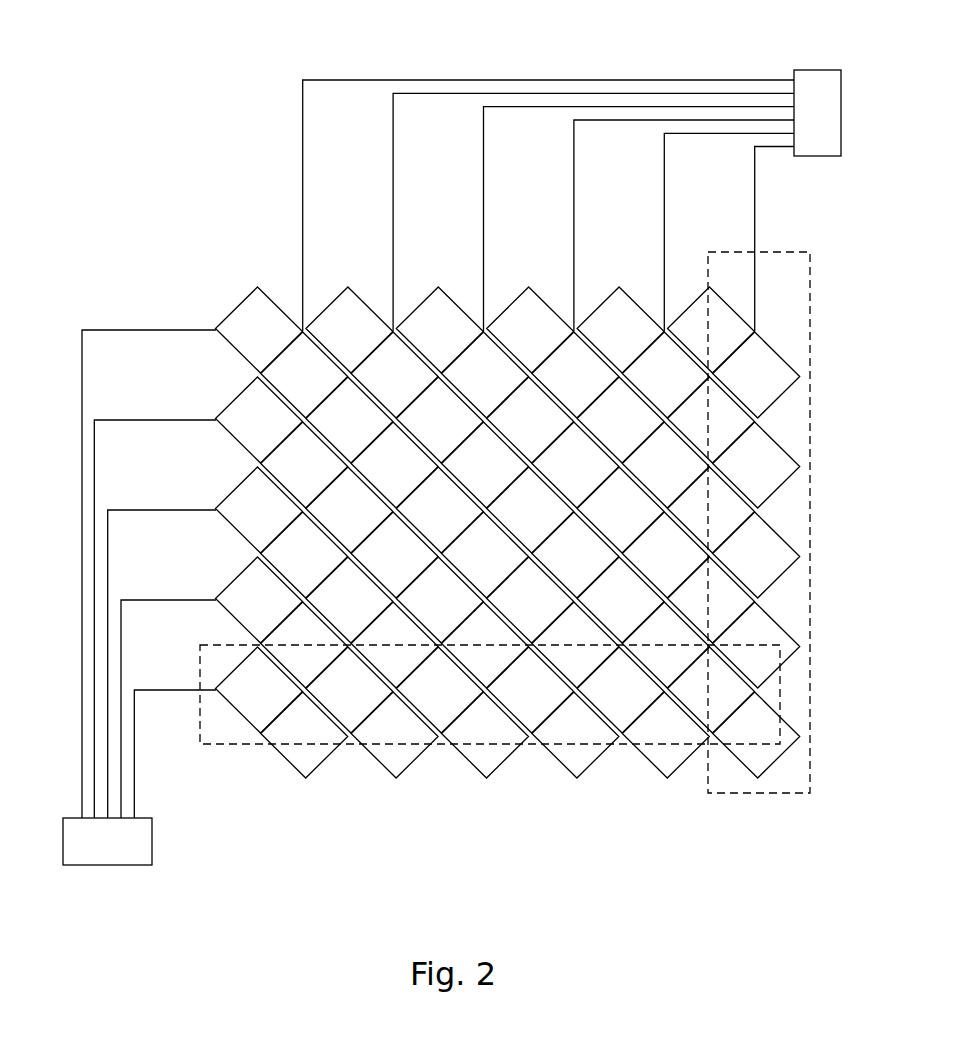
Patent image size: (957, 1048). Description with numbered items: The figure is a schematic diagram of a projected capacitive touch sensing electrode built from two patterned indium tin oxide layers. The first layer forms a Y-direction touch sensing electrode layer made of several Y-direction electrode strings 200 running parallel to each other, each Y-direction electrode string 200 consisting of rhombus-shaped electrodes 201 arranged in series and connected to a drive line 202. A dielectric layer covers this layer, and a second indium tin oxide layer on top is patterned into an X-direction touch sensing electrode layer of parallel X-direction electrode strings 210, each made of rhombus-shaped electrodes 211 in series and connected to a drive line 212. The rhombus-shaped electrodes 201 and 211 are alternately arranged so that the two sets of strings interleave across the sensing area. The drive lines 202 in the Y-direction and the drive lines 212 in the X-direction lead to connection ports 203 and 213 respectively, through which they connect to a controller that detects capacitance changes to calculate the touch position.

The Y-direction electrode string 200 is at (762, 795).
The rhombus-shaped electrode 201 is at (770, 385).
The drive line 202 is at (757, 182).
The connection port 203 is at (815, 75).
The X-direction electrode string 210 is at (232, 737).
The rhombus-shaped electrode 211 is at (250, 705).
The drive line 212 is at (163, 418).
The connection port 213 is at (105, 867).